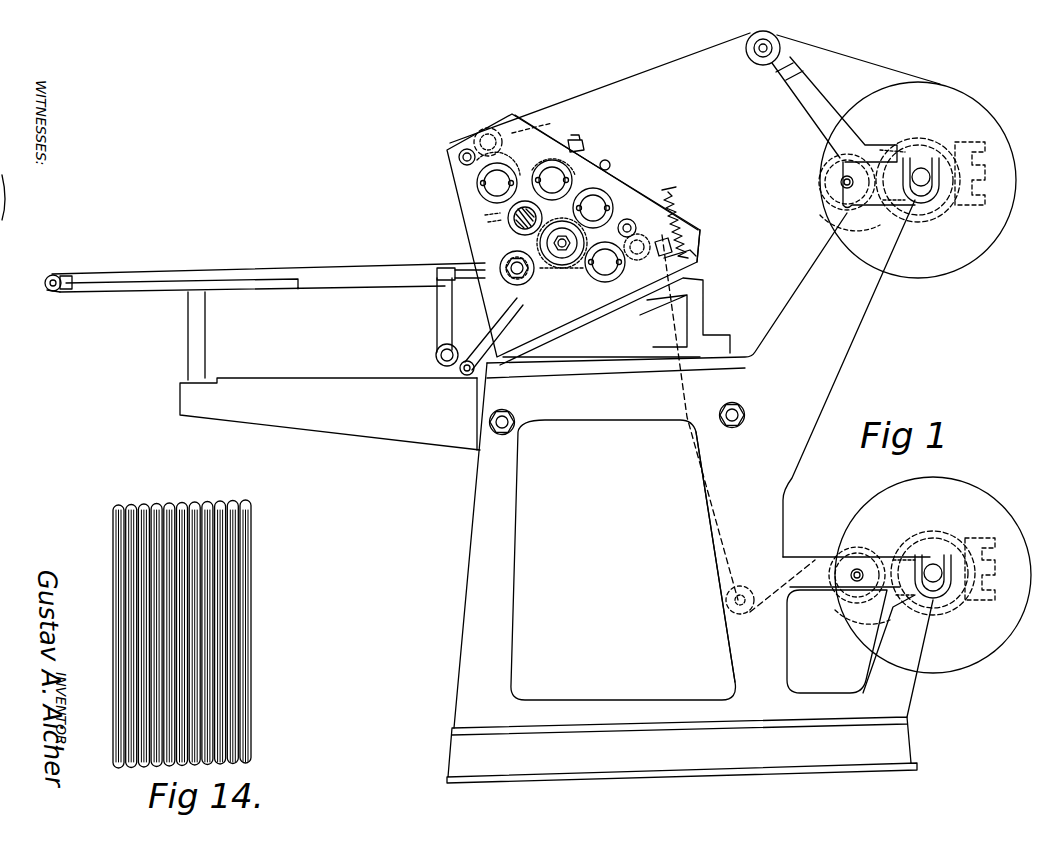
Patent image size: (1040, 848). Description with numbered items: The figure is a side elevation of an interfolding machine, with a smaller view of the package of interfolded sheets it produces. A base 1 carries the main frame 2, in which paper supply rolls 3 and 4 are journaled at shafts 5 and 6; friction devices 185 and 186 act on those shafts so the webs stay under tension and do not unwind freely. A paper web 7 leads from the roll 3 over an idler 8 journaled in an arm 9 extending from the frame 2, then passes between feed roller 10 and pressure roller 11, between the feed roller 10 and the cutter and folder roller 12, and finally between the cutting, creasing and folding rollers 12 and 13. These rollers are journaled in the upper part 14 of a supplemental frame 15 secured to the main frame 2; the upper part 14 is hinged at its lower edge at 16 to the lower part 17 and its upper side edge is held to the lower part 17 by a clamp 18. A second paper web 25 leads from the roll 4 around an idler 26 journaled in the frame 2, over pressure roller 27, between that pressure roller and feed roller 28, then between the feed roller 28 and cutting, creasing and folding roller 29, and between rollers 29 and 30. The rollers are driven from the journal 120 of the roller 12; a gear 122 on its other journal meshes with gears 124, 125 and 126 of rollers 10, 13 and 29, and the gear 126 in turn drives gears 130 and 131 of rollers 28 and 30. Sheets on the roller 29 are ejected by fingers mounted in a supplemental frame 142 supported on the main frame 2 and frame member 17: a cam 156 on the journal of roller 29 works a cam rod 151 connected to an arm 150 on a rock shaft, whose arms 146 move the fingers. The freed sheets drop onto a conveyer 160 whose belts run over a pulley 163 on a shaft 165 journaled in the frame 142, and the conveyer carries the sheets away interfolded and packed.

The base 1 is at (898, 749).
The main frame 2 is at (505, 577).
The paper supply roll 3 is at (962, 103).
The paper supply roll 4 is at (972, 486).
The shaft 5 is at (925, 183).
The shaft 6 is at (938, 582).
The paper web 7 is at (826, 50).
The idler 8 is at (750, 60).
The arm 9 is at (810, 112).
The feed roller 10 is at (477, 185).
The pressure roller 11 is at (488, 130).
The cutter and folder roller 12 is at (500, 232).
The cutting, creasing and folding roller 13 is at (571, 142).
The upper part of supplemental frame 14 is at (445, 152).
The supplemental frame 15 is at (603, 156).
The hinge 16 is at (500, 266).
The lower part of supplemental frame 17 is at (632, 190).
The clamp 18 is at (580, 148).
The paper web 25 is at (692, 443).
The idler 26 is at (722, 610).
The pressure roller 27 is at (637, 261).
The feed roller 28 is at (605, 282).
The cutting, creasing and folding roller 29 is at (562, 268).
The cutting, creasing and folding roller 30 is at (637, 192).
The journal 120 is at (508, 216).
The gear 122 is at (452, 230).
The gear 124 is at (437, 180).
The gear 125 is at (552, 160).
The gear 126 is at (540, 298).
The gear 130 is at (595, 312).
The gear 131 is at (607, 192).
The supplemental frame 142 is at (437, 311).
The arms 146 is at (437, 272).
The arm 150 is at (447, 366).
The cam rod 151 is at (480, 350).
The cam 156 is at (530, 250).
The conveyer 160 is at (297, 270).
The pulley 163 is at (47, 280).
The shaft 165 is at (48, 291).
The friction device 185 is at (913, 140).
The friction device 186 is at (926, 534).